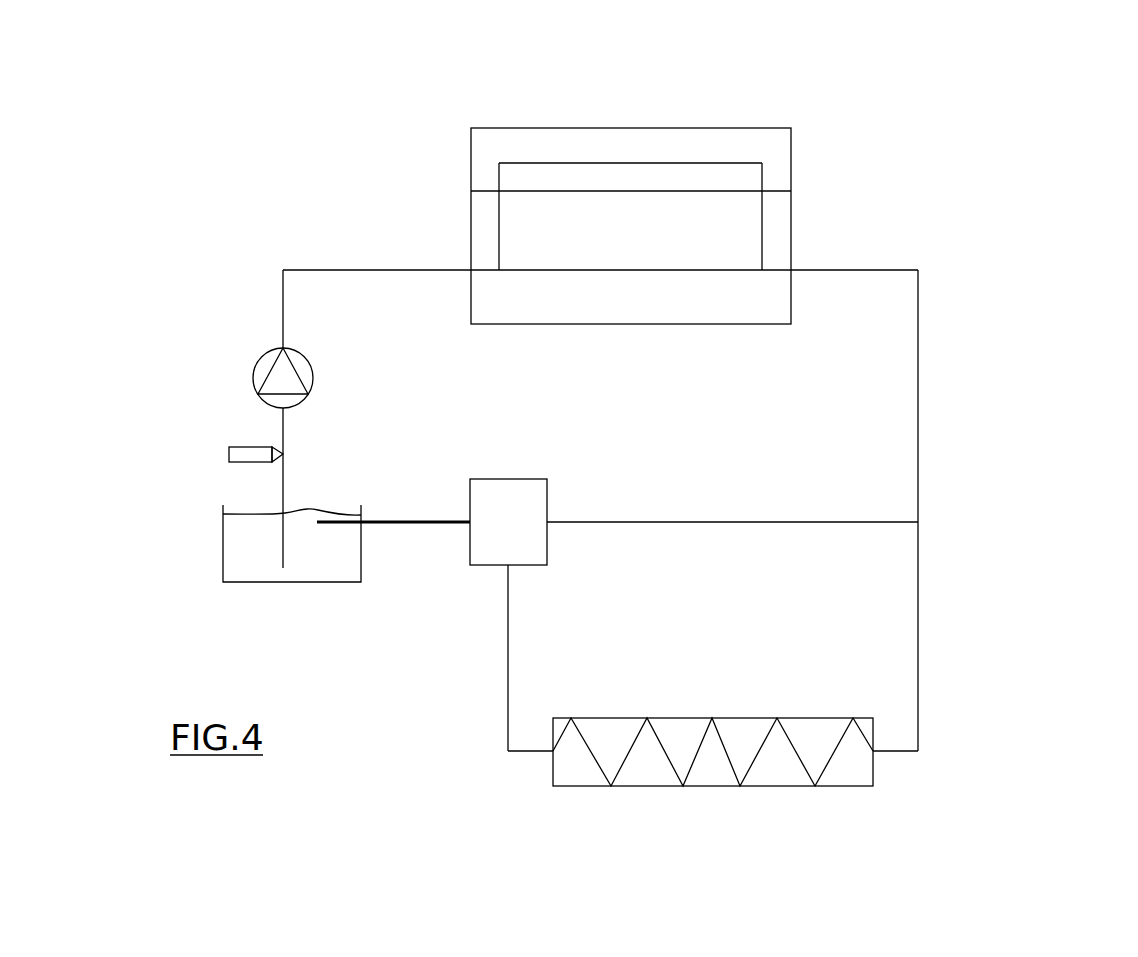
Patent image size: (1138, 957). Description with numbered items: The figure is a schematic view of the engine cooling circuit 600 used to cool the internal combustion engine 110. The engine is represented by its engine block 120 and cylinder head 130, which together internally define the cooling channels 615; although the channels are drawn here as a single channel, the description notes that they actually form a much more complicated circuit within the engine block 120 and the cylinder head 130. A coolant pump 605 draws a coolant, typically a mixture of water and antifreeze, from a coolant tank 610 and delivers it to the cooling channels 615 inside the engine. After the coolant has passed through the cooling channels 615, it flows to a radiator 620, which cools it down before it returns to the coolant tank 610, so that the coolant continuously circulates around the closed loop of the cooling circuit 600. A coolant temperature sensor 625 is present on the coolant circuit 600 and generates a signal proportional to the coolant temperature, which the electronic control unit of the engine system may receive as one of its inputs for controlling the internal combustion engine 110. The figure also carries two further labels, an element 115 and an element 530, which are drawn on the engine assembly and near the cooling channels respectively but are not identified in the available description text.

The internal combustion engine 110 is at (796, 143).
The substrate support / platen 115 is at (791, 191).
The engine block 120 is at (480, 233).
The cylinder head 130 is at (495, 138).
The fluid inlet 530 is at (643, 158).
The engine cooling circuit 600 is at (922, 520).
The coolant pump 605 is at (281, 377).
The coolant tank 610 is at (267, 568).
The cooling channels 615 is at (625, 270).
The radiator 620 is at (602, 752).
The coolant temperature sensor 625 is at (240, 458).